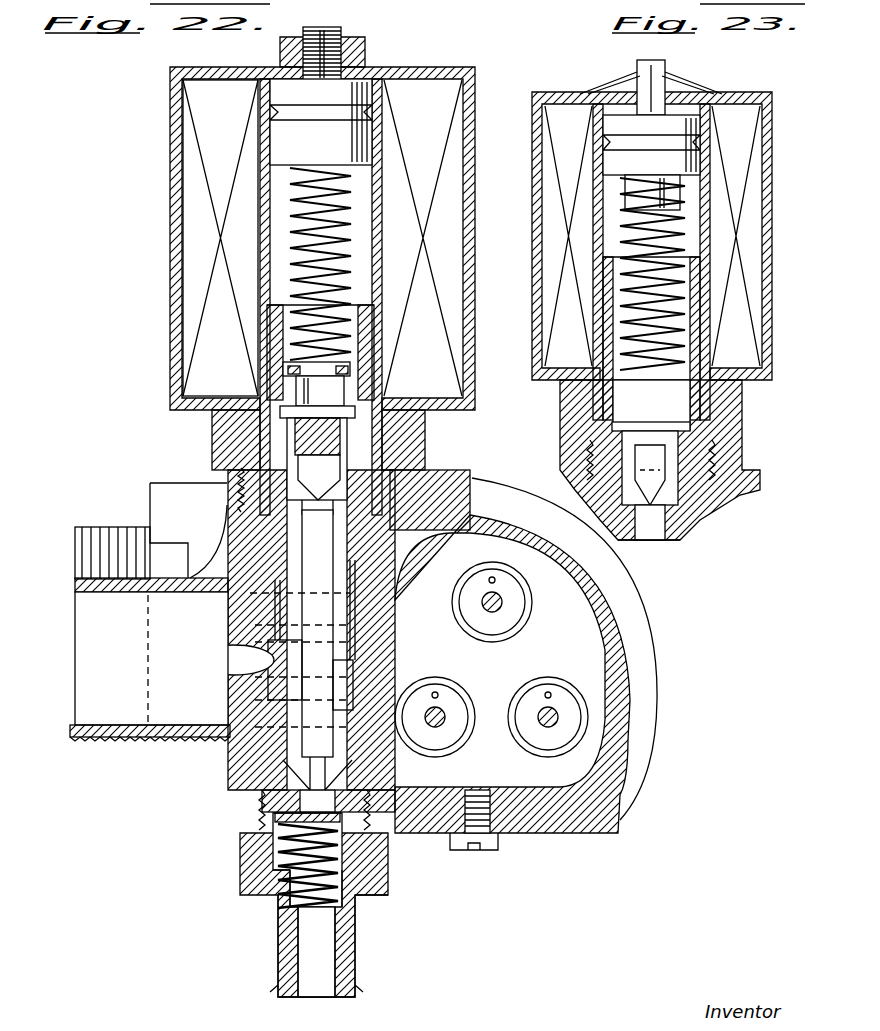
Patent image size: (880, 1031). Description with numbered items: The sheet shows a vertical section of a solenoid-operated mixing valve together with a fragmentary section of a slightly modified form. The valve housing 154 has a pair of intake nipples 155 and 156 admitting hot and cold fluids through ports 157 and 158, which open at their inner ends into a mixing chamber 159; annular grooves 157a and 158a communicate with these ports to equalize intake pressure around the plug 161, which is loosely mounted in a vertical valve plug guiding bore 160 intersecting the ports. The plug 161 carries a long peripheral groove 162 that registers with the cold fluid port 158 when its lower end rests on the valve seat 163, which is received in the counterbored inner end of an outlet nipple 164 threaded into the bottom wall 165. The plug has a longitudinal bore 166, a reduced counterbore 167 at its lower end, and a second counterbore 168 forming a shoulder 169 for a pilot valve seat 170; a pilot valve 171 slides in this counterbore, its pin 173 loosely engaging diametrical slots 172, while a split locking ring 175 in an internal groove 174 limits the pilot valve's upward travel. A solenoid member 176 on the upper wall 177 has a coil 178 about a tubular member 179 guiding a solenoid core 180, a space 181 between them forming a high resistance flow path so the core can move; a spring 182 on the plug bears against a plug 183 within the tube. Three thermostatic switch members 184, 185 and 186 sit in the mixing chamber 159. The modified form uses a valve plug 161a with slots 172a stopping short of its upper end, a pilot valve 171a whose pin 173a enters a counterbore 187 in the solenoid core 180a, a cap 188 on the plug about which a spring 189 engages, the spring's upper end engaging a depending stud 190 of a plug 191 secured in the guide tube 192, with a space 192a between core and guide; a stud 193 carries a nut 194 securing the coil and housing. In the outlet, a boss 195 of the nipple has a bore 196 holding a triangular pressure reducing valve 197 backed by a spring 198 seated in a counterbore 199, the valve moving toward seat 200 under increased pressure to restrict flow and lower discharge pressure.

In FIG. 22, the valve housing 154 is at (445, 485).
In FIG. 22, the intake nipple 155 is at (100, 527).
In FIG. 22, the intake nipple 156 is at (178, 740).
In FIG. 22, the port 157 is at (245, 612).
In FIG. 22, the annular groove 157a is at (365, 586).
In FIG. 22, the port 158 is at (222, 676).
In FIG. 22, the annular groove 158a is at (287, 668).
In FIG. 22, the mixing chamber 159 is at (620, 618).
In FIG. 22, the valve plug guiding bore 160 is at (375, 572).
In FIG. 22, the plug 161 is at (360, 612).
In FIG. 22, the peripheral groove 162 is at (360, 656).
In FIG. 22, the valve seat 163 is at (345, 792).
In FIG. 22, the outlet nipple 164 is at (280, 910).
In FIG. 22, the bottom wall 165 is at (472, 836).
In FIG. 22, the longitudinal bore 166 is at (355, 688).
In FIG. 22, the counterbore 167 is at (262, 780).
In FIG. 22, the second counterbore 168 is at (370, 457).
In FIG. 22, the shoulder 169 is at (340, 590).
In FIG. 22, the pilot valve seat 170 is at (319, 497).
In FIG. 22, the pilot valve 171 is at (356, 408).
In FIG. 22, the slots 172 is at (336, 392).
In FIG. 22, the pin 173 is at (283, 398).
In FIG. 22, the internal groove 174 is at (285, 370).
In FIG. 22, the split locking ring 175 is at (345, 365).
In FIG. 22, the solenoid member 176 is at (469, 278).
In FIG. 22, the upper wall 177 is at (462, 502).
In FIG. 22, the coil 178 is at (190, 249).
In FIG. 22, the tubular member 179 is at (258, 222).
In FIG. 22, the solenoid core 180 is at (288, 305).
In FIG. 22, the space 181 is at (380, 284).
In FIG. 22, the spring 182 is at (356, 218).
In FIG. 22, the plug 183 is at (380, 135).
In FIG. 22, the thermostatic switch member 184 is at (512, 632).
In FIG. 22, the thermostatic switch member 185 is at (470, 697).
In FIG. 22, the thermostatic switch member 186 is at (566, 684).
In FIG. 23, the counterbore 187 is at (705, 412).
In FIG. 23, the cap 188 is at (712, 385).
In FIG. 23, the spring 189 is at (612, 318).
In FIG. 23, the depending stud 190 is at (610, 240).
In FIG. 23, the plug 191 is at (620, 160).
In FIG. 23, the guide tube 192 is at (710, 200).
In FIG. 23, the space 192a is at (578, 268).
In FIG. 23, the stud 193 is at (668, 64).
In FIG. 23, the nut 194 is at (690, 84).
In FIG. 22, the boss 195 is at (268, 862).
In FIG. 22, the bore 196 is at (352, 870).
In FIG. 22, the pressure reducing valve 197 is at (255, 840).
In FIG. 22, the spring 198 is at (282, 870).
In FIG. 22, the counterbore 199 is at (330, 885).
In FIG. 22, the seat 200 is at (378, 858).
In FIG. 23, the valve plug 161a is at (678, 522).
In FIG. 23, the pilot valve 171a is at (695, 433).
In FIG. 23, the slots 172a is at (625, 412).
In FIG. 23, the pin 173a is at (585, 432).
In FIG. 23, the solenoid core 180a is at (690, 456).